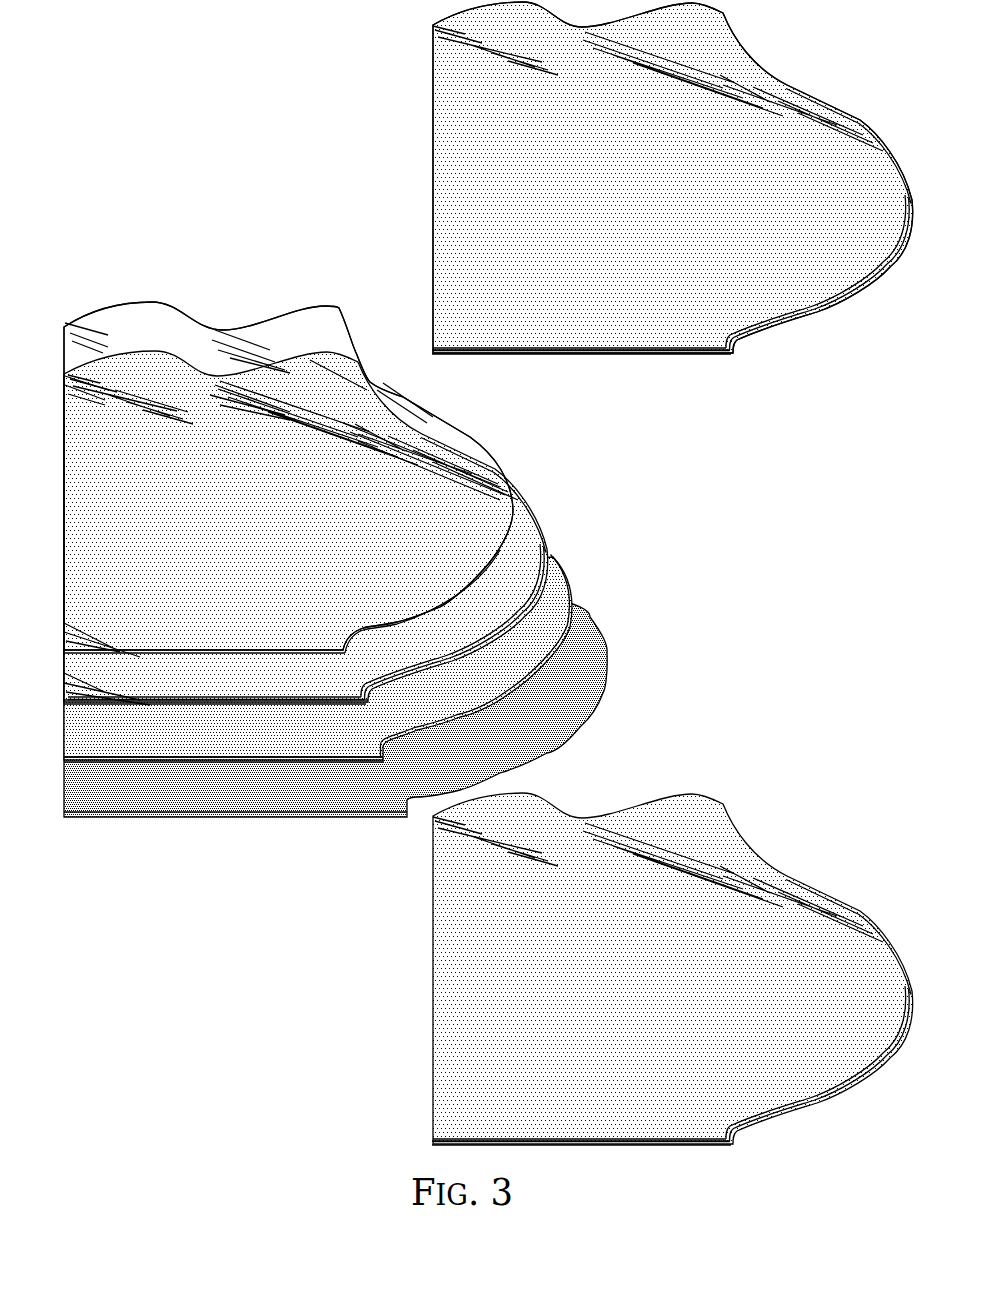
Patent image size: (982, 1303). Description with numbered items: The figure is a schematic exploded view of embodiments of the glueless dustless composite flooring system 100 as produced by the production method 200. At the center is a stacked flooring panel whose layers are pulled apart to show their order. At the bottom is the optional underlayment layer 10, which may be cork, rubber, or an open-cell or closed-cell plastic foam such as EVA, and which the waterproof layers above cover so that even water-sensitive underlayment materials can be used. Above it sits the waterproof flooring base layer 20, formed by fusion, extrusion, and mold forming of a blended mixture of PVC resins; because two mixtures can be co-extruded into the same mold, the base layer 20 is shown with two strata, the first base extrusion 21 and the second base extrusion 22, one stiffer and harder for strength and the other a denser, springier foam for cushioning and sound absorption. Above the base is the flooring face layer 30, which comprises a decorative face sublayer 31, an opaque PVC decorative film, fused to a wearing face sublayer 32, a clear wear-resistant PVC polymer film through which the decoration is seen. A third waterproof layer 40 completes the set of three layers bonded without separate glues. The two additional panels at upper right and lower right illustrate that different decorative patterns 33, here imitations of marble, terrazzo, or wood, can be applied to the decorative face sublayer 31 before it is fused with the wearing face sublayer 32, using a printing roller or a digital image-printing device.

The glueless dustless composite flooring system 100 is at (208, 141).
The production method 200 is at (194, 101).
The underlayment layer 10 is at (590, 652).
The flooring base layer 20 is at (563, 574).
The first base extrusion 21 is at (63, 762).
The second base extrusion 22 is at (63, 758).
The flooring face layer 30 is at (522, 531).
The decorative face sublayer 31 is at (63, 707).
The wearing face sublayer 32 is at (63, 703).
The decorative pattern 33 is at (48, 533).
The waterproof layer 40 is at (482, 459).